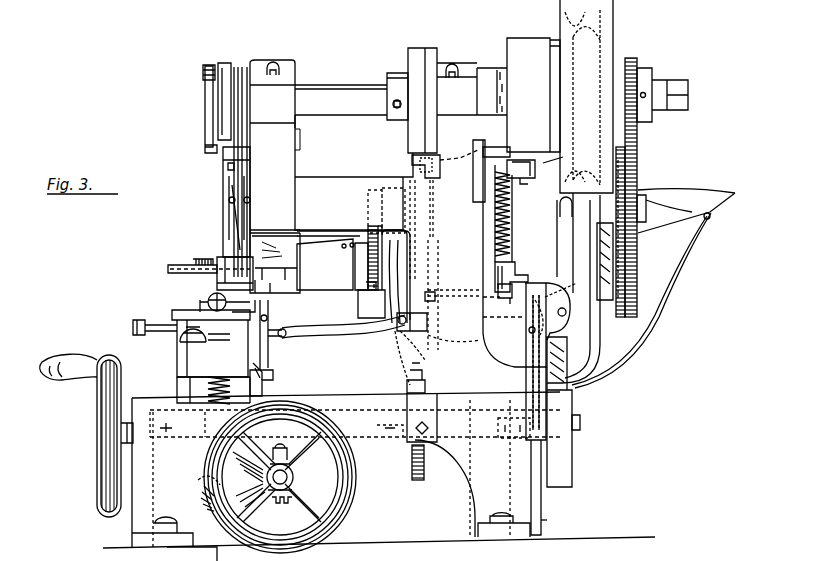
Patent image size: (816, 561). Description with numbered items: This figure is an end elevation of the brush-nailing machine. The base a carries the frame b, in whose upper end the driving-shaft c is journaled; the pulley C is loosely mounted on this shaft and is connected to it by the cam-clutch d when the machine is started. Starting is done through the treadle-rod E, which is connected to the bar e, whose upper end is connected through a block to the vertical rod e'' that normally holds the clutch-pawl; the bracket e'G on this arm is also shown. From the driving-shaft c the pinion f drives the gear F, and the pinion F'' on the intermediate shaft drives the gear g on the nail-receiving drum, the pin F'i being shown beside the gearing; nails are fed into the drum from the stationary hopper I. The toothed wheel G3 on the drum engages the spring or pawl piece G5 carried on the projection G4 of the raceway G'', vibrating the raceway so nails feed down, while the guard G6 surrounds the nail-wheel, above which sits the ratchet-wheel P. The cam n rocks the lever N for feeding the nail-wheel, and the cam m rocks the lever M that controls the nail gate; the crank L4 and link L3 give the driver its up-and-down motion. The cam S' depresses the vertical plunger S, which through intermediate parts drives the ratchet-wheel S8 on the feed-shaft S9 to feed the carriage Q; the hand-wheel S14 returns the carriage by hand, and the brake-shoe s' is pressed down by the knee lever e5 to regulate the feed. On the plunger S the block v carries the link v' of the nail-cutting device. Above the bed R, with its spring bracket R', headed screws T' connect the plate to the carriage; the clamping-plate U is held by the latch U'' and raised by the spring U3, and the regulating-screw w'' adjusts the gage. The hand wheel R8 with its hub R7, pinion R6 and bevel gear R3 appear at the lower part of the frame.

The base a is at (379, 474).
The ratchet-wheel S8 is at (422, 481).
The hand wheel R8 is at (352, 497).
The hub R7 is at (296, 471).
The pinion R6 is at (304, 485).
The bevel gear R3 is at (212, 511).
The feed-shaft S9 is at (130, 433).
The crank or hand-wheel S14 is at (96, 383).
The regulating-screw w'' is at (137, 324).
The headed screws T' is at (191, 332).
The bed R is at (212, 348).
The spring bracket R' is at (190, 386).
The latch or cam-lever U'' is at (192, 297).
The clamping plate or bar U is at (195, 299).
The spring U3 is at (266, 344).
The carriage Q is at (268, 386).
The link v' is at (337, 327).
The block v is at (422, 352).
The ratchet-wheel P is at (190, 260).
The metal band or guard G6 is at (168, 268).
The crank L4 is at (203, 72).
The link L3 is at (212, 115).
The cam n is at (235, 67).
The cam m is at (246, 68).
The lever N is at (237, 212).
The lever M is at (266, 238).
The driving-shaft c is at (351, 96).
The frame b is at (364, 197).
The cam S' is at (410, 100).
The vertical plunger S is at (430, 250).
The cam-clutch d is at (498, 95).
The pulley C is at (586, 96).
The spring bracket e'G is at (523, 236).
The cam or knee lever e5 is at (550, 290).
The vertical rod e'' is at (504, 300).
The bar e is at (530, 409).
The brake-shoe or friction-plate s' is at (563, 412).
The rod E is at (544, 523).
The gear g is at (629, 291).
The pinion f is at (638, 63).
The gear F is at (636, 230).
The pinion F'' is at (645, 230).
The pin F'i is at (652, 209).
The stationary hopper I is at (700, 193).
The toothed wheel G3 is at (364, 237).
The raceway G'' is at (325, 264).
The projection G4 is at (367, 272).
The spring or pawl piece G5 is at (366, 306).